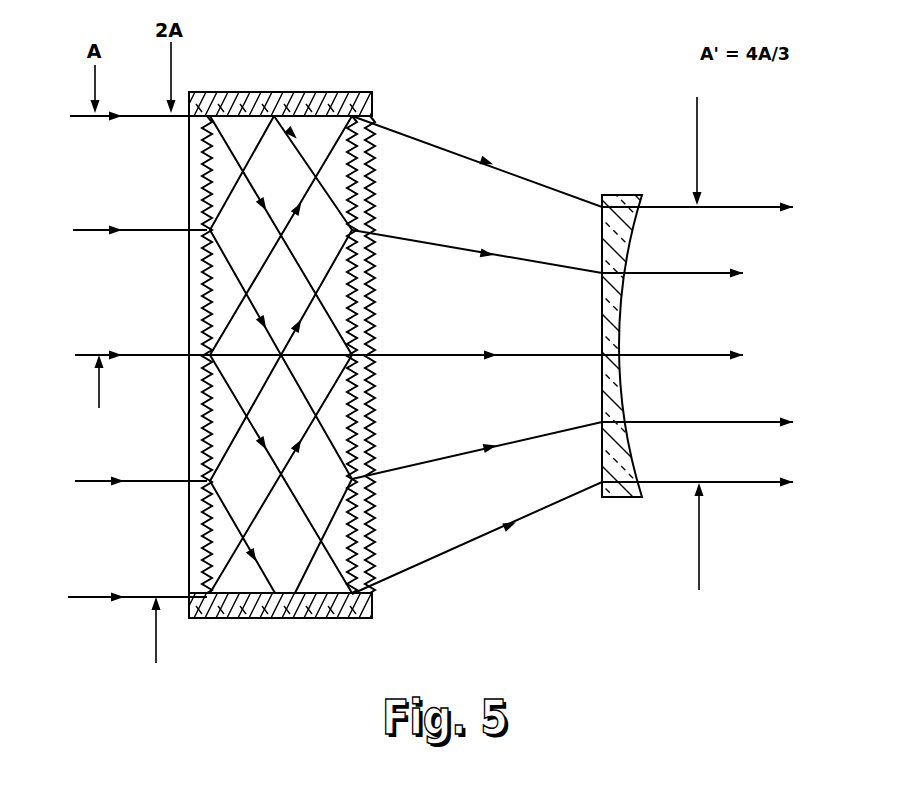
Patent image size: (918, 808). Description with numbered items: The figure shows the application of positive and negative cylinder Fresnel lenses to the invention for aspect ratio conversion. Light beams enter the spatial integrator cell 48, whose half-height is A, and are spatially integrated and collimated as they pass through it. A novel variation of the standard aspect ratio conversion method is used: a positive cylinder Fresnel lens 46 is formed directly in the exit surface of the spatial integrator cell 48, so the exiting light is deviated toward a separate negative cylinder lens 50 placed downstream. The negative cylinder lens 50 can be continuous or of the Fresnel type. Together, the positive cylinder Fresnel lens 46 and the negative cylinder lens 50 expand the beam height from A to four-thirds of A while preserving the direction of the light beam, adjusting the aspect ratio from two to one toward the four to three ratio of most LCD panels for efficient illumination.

The positive cylinder Fresnel lens 46 is at (368, 322).
The spatial integrator cell 48 is at (288, 620).
The negative cylinder lens 50 is at (603, 402).